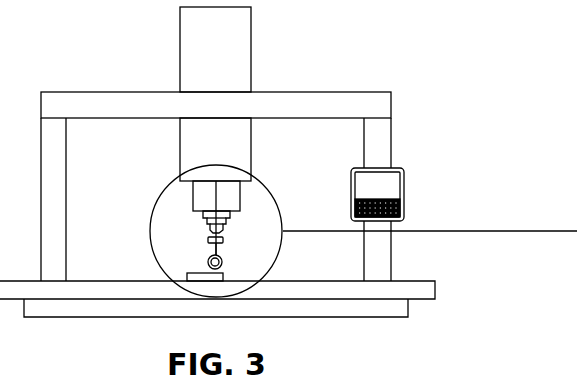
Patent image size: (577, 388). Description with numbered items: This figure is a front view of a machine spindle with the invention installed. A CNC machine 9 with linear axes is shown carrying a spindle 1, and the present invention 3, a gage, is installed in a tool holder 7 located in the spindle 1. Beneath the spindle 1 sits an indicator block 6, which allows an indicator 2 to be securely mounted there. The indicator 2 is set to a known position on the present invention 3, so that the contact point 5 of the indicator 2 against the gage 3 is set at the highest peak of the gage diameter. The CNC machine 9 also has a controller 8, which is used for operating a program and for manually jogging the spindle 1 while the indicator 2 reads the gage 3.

The machine spindle 1 is at (193, 196).
The indicator 2 is at (208, 262).
The present invention 3 is at (208, 241).
The contact point 5 is at (218, 246).
The indicator block 6 is at (223, 277).
The tool holder 7 is at (226, 222).
The controller 8 is at (351, 207).
The CNC machine 9 is at (251, 168).